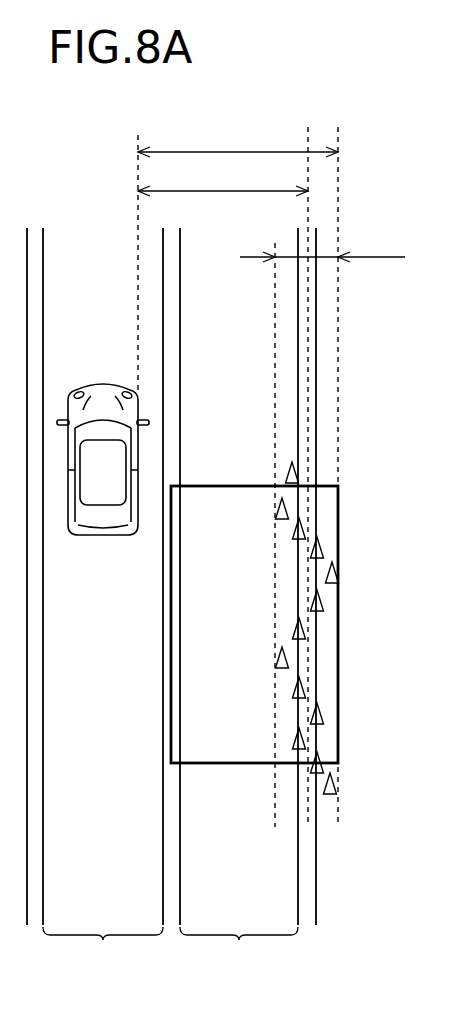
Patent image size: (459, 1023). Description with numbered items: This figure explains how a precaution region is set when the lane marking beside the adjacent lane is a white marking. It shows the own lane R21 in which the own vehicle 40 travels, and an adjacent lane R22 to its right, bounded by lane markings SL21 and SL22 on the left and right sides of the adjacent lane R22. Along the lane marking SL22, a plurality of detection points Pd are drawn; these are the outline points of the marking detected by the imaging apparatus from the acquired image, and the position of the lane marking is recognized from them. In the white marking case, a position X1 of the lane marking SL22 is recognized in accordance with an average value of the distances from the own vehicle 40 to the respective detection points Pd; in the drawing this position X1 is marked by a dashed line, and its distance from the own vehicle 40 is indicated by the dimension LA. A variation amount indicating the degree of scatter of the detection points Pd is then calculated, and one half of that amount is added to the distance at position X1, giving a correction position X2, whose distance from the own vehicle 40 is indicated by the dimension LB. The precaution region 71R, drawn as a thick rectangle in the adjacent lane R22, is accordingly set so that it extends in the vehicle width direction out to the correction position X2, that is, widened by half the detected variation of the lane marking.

The own vehicle 40 is at (96, 386).
The precaution region 71R is at (236, 485).
The detection points Pd is at (337, 566).
The lane marking SL21 is at (162, 873).
The lane marking SL22 is at (316, 882).
The own lane R21 is at (103, 950).
The adjacent lane R22 is at (239, 950).
The position X1 is at (305, 464).
The correction position X2 is at (343, 464).
The distance LA is at (223, 181).
The distance LB is at (238, 142).